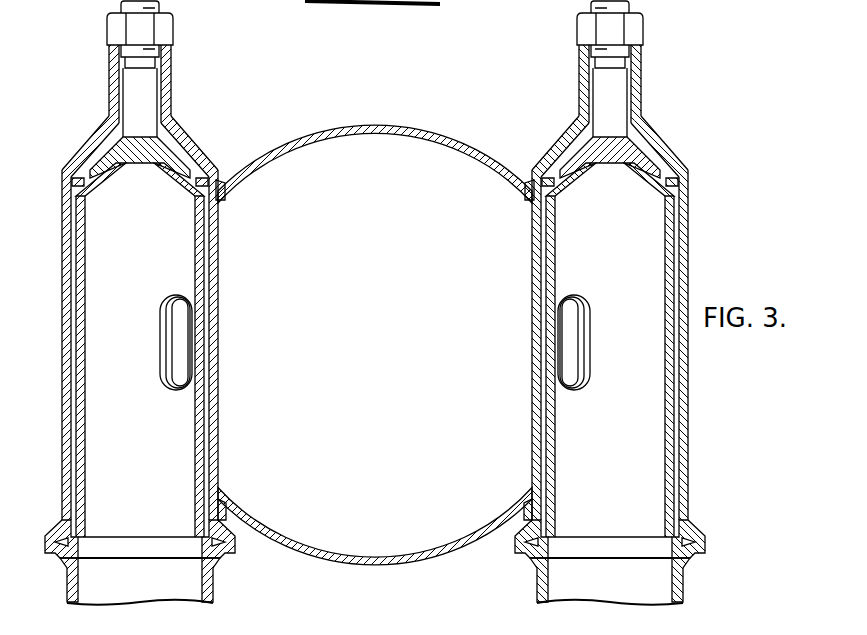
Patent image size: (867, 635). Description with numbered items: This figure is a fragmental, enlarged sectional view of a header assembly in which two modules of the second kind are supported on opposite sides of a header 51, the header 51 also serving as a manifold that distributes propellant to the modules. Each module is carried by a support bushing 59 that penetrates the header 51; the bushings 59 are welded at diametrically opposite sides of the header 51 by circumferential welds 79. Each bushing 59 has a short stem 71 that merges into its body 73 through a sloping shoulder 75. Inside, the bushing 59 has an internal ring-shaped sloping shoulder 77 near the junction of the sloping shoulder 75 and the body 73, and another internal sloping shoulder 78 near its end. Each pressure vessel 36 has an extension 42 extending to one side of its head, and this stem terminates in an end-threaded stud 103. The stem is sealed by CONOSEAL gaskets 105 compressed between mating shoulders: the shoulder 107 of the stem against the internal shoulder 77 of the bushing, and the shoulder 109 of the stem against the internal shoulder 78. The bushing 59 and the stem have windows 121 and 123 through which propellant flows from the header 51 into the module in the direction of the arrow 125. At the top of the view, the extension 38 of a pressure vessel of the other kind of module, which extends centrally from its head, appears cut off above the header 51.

The extension 38 is at (391, 8).
The end-threaded stud 103 is at (145, 49).
The short stem 71 is at (167, 86).
The sloping shoulder 75 is at (181, 131).
The internal ring-shaped sloping shoulder 77 is at (199, 160).
The CONOSEAL gaskets 105 is at (78, 174).
The shoulder 107 is at (82, 182).
The support bushing 59 is at (47, 205).
The extension 42 is at (73, 234).
The window 121 is at (182, 298).
The window 123 is at (163, 301).
The arrow 125 is at (187, 339).
The header 51 is at (364, 126).
The body 73 is at (215, 197).
The circumferential welds 79 is at (530, 181).
The internal sloping shoulder 78 is at (74, 540).
The shoulder 109 is at (214, 551).
The pressure vessel 36 is at (256, 606).